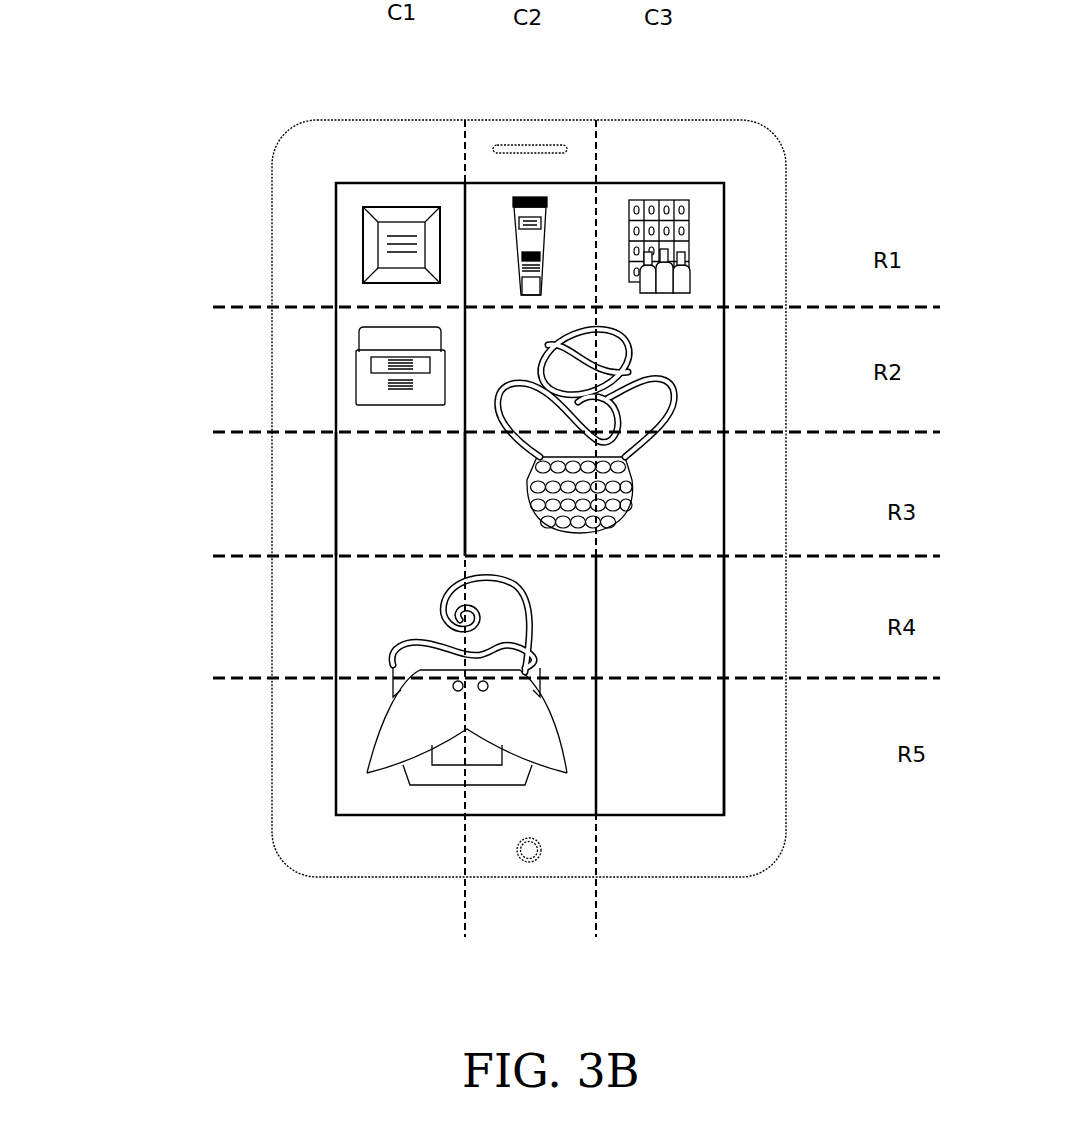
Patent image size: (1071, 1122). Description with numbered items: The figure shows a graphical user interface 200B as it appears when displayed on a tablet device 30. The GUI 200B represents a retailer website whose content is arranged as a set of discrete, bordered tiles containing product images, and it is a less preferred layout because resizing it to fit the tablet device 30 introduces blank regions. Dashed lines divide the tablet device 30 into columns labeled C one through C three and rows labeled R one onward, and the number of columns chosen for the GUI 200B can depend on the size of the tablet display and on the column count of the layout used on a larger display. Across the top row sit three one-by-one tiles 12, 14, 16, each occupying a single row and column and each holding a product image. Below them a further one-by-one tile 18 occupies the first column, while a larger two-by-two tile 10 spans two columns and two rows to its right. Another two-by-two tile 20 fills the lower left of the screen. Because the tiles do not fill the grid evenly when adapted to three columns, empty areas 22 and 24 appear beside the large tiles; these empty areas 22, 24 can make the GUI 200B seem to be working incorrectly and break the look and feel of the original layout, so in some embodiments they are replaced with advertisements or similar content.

The graphical user interface 200B is at (857, 78).
The tile 10 is at (727, 456).
The tile 12 is at (435, 182).
The tile 14 is at (574, 182).
The tile 16 is at (692, 182).
The tile 18 is at (333, 371).
The tile 20 is at (435, 817).
The empty area 22 is at (333, 494).
The empty area 24 is at (727, 698).
The tablet device 30 is at (265, 586).